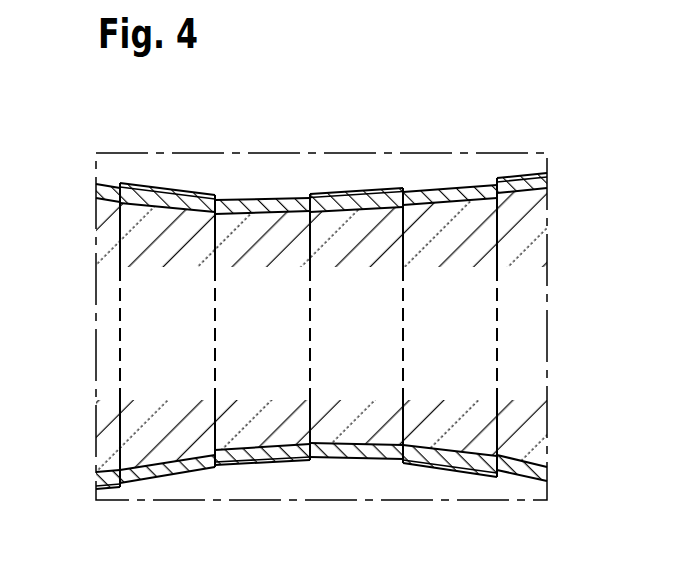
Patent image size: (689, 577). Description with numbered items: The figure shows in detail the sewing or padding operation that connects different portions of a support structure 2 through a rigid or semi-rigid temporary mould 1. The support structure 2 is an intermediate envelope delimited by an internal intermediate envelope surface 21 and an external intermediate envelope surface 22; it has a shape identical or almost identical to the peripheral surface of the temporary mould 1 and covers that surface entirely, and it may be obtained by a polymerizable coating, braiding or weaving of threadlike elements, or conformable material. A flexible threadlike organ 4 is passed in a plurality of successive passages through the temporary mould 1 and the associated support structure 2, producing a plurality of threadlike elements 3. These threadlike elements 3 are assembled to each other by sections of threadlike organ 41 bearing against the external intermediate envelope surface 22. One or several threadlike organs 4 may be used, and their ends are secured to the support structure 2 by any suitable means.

The temporary mould 1 is at (525, 230).
The support structure 2 is at (253, 203).
The internal intermediate envelope surface 21 is at (515, 443).
The external intermediate envelope surface 22 is at (288, 186).
The threadlike elements 3 is at (307, 414).
The flexible threadlike organ 4 is at (418, 232).
The sections of threadlike organ 41 is at (163, 191).